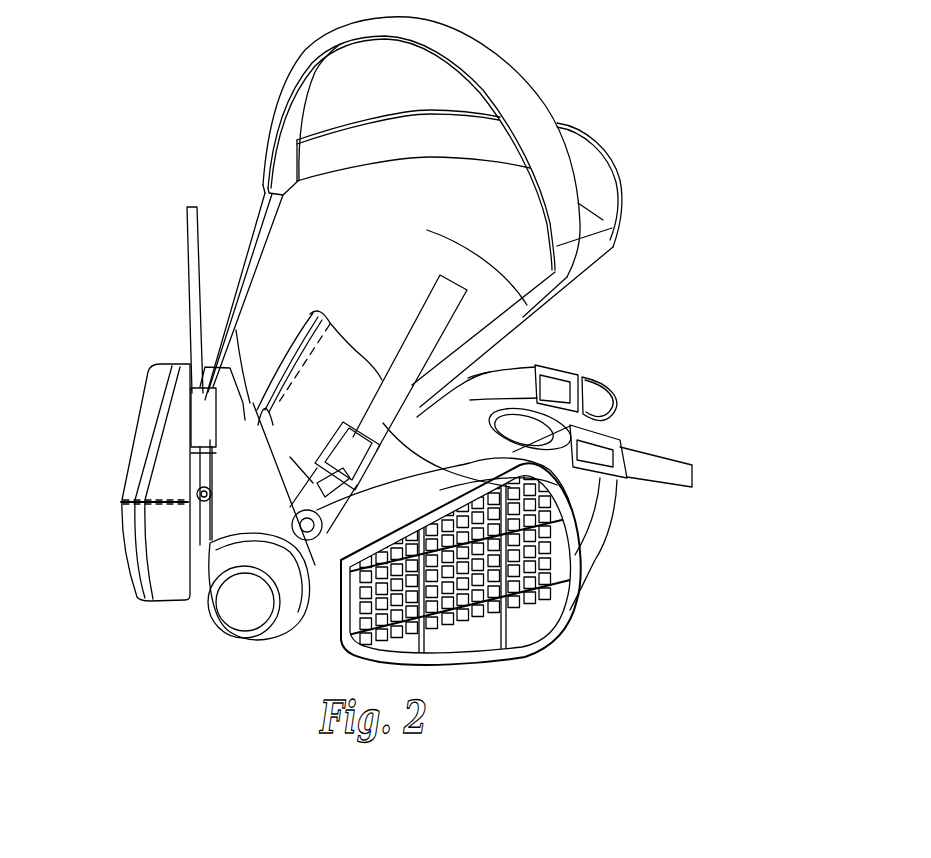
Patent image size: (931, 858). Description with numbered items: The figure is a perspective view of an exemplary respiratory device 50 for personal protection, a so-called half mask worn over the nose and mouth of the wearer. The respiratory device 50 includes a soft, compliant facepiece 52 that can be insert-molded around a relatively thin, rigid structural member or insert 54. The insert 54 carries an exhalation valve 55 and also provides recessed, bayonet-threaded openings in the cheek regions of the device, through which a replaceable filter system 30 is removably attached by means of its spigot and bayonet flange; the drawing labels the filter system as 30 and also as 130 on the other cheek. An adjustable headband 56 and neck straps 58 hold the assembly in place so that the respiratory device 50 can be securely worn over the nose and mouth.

The respiratory device 50 is at (587, 94).
The facepiece 52 is at (343, 358).
The insert 54 is at (233, 505).
The exhalation valve 55 is at (257, 633).
The adjustable headband 56 is at (273, 223).
The neck straps 58 is at (510, 363).
The filter system 30 is at (172, 597).
The filter cartridge 130 is at (570, 611).